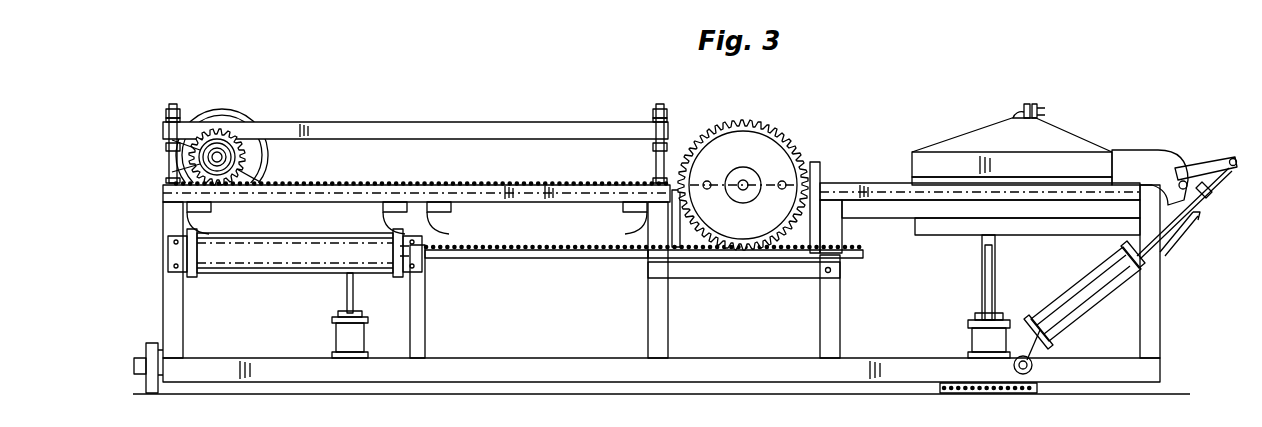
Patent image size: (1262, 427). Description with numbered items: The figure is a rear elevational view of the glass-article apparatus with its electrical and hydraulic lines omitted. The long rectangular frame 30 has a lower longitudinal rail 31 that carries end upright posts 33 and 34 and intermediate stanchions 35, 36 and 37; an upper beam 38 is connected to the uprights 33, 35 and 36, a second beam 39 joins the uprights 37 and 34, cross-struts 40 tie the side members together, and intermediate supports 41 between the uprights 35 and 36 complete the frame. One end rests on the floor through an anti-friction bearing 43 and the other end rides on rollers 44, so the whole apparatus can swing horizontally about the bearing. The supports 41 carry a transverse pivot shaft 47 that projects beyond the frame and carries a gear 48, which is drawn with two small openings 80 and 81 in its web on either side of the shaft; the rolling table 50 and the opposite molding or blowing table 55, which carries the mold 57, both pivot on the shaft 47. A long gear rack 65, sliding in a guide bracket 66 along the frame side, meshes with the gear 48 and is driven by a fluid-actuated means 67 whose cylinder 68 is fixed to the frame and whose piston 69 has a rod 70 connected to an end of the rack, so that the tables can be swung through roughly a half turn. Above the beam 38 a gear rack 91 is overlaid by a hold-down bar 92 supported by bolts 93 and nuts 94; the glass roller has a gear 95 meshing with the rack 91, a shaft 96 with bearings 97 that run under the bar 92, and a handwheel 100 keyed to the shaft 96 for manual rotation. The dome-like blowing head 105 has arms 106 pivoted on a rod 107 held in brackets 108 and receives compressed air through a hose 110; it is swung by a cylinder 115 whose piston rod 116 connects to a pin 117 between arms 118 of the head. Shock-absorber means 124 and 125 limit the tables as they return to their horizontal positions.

The frame 30 is at (1168, 329).
The lower longitudinal rail 31 is at (455, 366).
The upright post 33 is at (163, 300).
The upright post 34 is at (1160, 292).
The intermediate stanchion 35 is at (426, 293).
The intermediate stanchion 36 is at (648, 338).
The intermediate stanchion 37 is at (838, 338).
The upper longitudinal beam 38 is at (540, 184).
The beam 39 is at (886, 184).
The cross-strut 40 is at (185, 214).
The intermediate support 41 is at (816, 190).
The anti-friction bearing 43 is at (962, 394).
The roller 44 is at (150, 343).
The transverse pivot shaft 47 is at (743, 180).
The gear 48 is at (798, 152).
The rolling table 50 is at (506, 182).
The molding or blowing table 55 is at (876, 203).
The mold 57 is at (946, 228).
The gear rack 65 is at (486, 262).
The guide bracket 66 is at (736, 266).
The fluid-actuated means 67 is at (302, 242).
The cylinder 68 is at (254, 242).
The piston 69 is at (207, 270).
The piston rod 70 is at (278, 262).
The gear hole 80 is at (707, 189).
The gear hole 81 is at (780, 189).
The gear rack 91 is at (382, 180).
The hold-down bar 92 is at (163, 134).
The bolt or stud 93 is at (172, 104).
The nut 94 is at (166, 115).
The gear 95 is at (196, 166).
The roller shaft 96 is at (212, 157).
The bearing 97 is at (232, 140).
The handwheel 100 is at (218, 116).
The blowing head 105 is at (975, 136).
The arm 106 is at (1128, 152).
The rod 107 is at (1196, 205).
The bracket 108 is at (1172, 236).
The hose 110 is at (1044, 106).
The cylinder 115 is at (1088, 318).
The piston rod 116 is at (1200, 197).
The pin 117 is at (1234, 157).
The arm 118 is at (1200, 158).
The shock-absorber means 124 is at (336, 338).
The shock-absorber means 125 is at (970, 338).